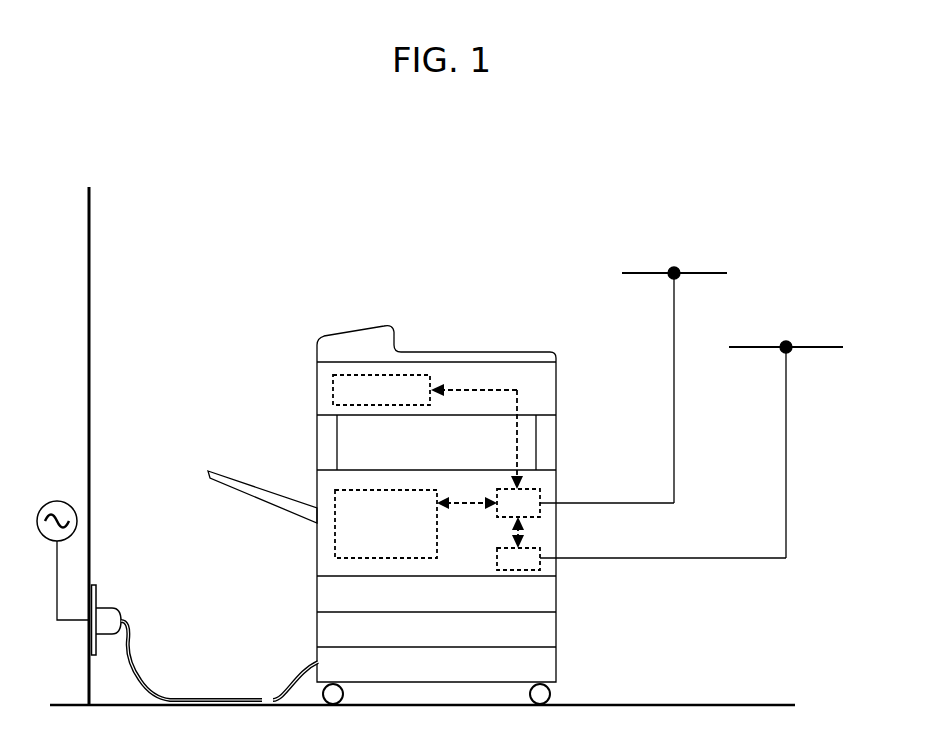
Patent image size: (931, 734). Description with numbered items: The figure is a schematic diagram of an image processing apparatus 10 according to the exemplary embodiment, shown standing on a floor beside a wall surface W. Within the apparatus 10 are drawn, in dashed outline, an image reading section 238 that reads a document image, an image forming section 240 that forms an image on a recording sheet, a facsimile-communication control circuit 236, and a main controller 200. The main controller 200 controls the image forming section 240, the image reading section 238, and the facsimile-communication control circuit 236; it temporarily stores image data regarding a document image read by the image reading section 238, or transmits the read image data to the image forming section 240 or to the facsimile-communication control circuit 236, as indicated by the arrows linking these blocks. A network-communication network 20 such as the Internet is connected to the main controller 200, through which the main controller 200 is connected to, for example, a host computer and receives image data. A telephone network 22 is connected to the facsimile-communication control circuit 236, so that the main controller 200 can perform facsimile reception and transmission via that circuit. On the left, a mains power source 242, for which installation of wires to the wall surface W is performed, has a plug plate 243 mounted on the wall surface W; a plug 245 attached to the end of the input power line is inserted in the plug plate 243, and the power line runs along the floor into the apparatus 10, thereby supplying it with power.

The wall surface W is at (91, 295).
The image processing apparatus 10 is at (325, 294).
The network-communication network 20 is at (704, 272).
The telephone network 22 is at (824, 346).
The main controller 200 is at (541, 489).
The facsimile-communication control circuit 236 is at (535, 572).
The image reading section 238 is at (333, 388).
The image forming section 240 is at (357, 560).
The mains power source 242 is at (57, 500).
The plug plate 243 is at (95, 590).
The plug 245 is at (120, 609).